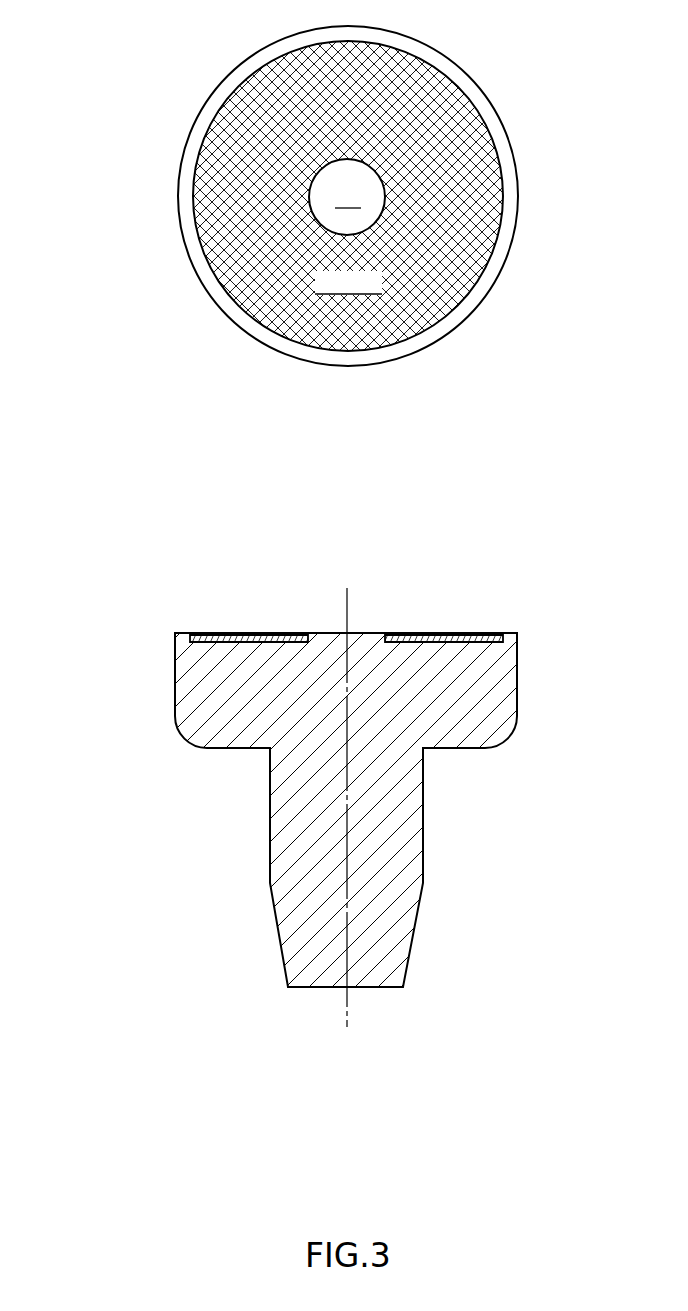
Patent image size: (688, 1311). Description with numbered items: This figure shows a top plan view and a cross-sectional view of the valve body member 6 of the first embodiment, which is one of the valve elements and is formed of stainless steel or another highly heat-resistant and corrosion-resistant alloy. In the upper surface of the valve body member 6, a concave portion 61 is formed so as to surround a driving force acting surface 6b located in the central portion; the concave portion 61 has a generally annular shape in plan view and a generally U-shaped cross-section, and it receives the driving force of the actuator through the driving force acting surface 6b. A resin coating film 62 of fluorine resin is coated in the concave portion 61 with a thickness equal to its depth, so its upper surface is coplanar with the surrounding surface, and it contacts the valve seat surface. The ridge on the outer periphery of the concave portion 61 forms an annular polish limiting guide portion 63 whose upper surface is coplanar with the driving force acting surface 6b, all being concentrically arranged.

The valve body member 6 is at (175, 72).
The driving force acting surface 6b is at (361, 208).
The concave portion 61 is at (190, 192).
The resin coating film 62 is at (382, 294).
The polish limiting guide portion 63 is at (202, 275).